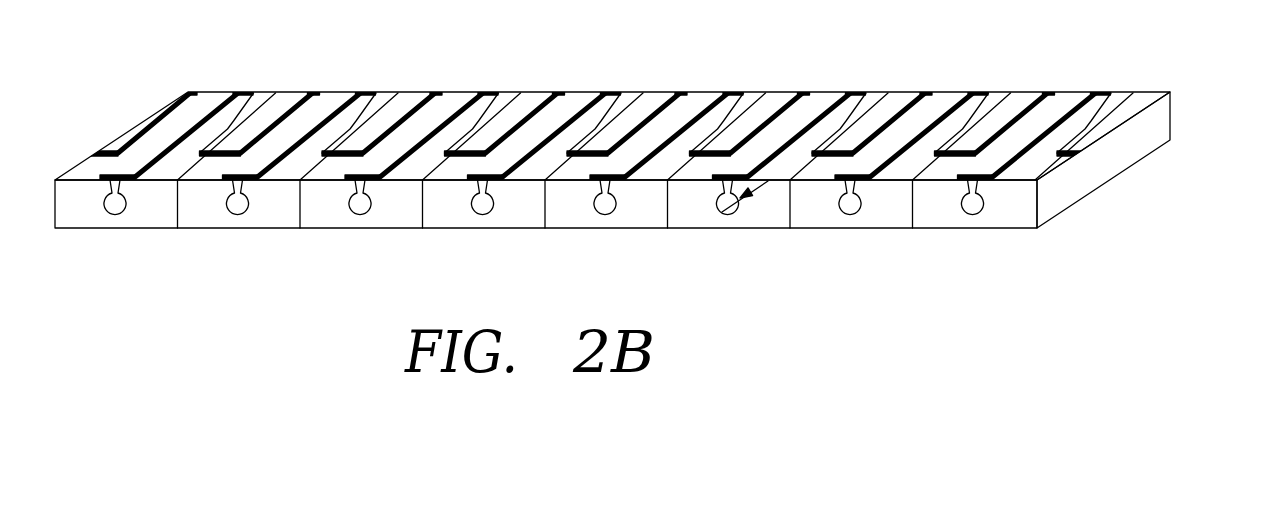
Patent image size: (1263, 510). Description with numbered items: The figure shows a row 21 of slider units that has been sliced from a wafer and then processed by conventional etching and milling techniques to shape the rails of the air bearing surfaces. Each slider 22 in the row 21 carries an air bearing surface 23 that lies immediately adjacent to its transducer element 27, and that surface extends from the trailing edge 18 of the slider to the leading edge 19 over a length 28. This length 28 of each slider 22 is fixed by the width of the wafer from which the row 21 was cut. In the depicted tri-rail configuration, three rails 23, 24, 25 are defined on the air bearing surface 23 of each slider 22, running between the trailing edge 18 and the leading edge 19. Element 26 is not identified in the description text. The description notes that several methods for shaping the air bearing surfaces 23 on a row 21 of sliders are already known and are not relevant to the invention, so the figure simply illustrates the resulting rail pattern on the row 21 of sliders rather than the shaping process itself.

The trailing edge 18 is at (650, 208).
The leading edge 19 is at (757, 92).
The row 21 is at (1172, 116).
The slider 22 is at (568, 82).
The air bearing surface 23 is at (137, 148).
The rail 24 is at (197, 102).
The rail 25 is at (247, 93).
The stepped pad 26 is at (266, 112).
The transducer element 27 is at (610, 228).
The length 28 is at (912, 85).